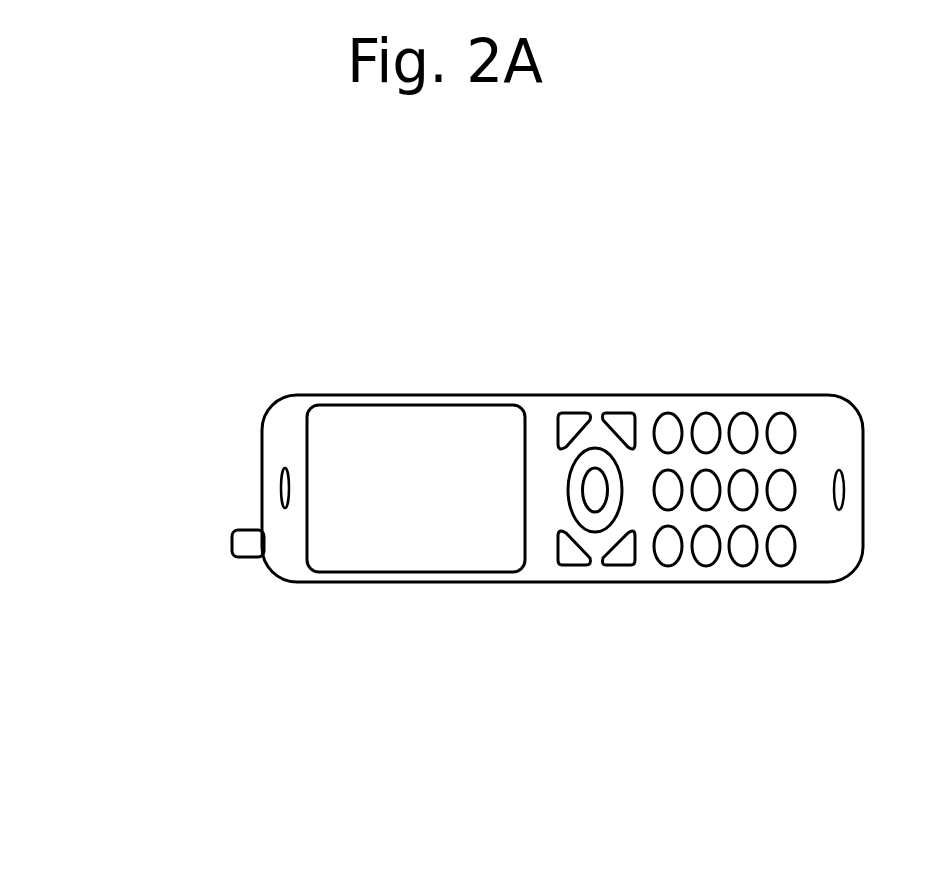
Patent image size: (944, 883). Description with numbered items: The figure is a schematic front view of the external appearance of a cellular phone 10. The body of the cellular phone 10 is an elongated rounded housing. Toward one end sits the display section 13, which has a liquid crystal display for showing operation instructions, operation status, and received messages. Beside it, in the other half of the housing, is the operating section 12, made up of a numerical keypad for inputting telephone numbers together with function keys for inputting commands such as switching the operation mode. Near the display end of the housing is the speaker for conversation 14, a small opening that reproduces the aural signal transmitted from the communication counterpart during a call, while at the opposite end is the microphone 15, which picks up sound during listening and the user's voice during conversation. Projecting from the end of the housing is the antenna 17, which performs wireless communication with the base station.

The cellular phone 10 is at (130, 493).
The operating section 12 is at (652, 413).
The display section 13 is at (358, 571).
The speaker for conversation 14 is at (285, 468).
The microphone 15 is at (839, 510).
The antenna 17 is at (232, 540).